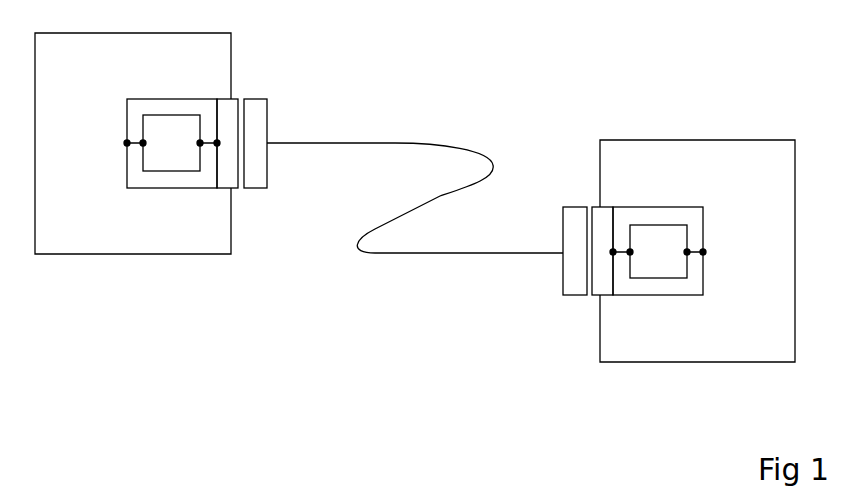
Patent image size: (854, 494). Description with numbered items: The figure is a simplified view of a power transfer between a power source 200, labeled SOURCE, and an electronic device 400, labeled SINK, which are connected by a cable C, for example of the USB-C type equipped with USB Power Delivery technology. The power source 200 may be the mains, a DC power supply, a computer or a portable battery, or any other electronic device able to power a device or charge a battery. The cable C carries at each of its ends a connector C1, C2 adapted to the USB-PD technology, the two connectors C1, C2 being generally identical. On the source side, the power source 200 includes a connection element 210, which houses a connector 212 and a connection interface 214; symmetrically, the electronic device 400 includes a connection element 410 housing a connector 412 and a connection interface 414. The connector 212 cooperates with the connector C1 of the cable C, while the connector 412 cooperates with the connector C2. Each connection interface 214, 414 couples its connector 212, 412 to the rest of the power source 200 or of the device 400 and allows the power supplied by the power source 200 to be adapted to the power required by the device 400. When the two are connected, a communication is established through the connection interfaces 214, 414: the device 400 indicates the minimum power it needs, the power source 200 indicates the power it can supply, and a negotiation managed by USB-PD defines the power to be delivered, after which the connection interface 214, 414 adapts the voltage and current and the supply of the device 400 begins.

The power source 200 is at (59, 245).
The connection element 210 is at (198, 188).
The connector 212 is at (233, 177).
The connection interface 214 is at (173, 163).
The connector C1 is at (260, 108).
The cable C is at (477, 152).
The connector C2 is at (578, 220).
The electronic device 400 is at (768, 345).
The connection element 410 is at (642, 296).
The connector 412 is at (600, 278).
The connection interface 414 is at (667, 262).